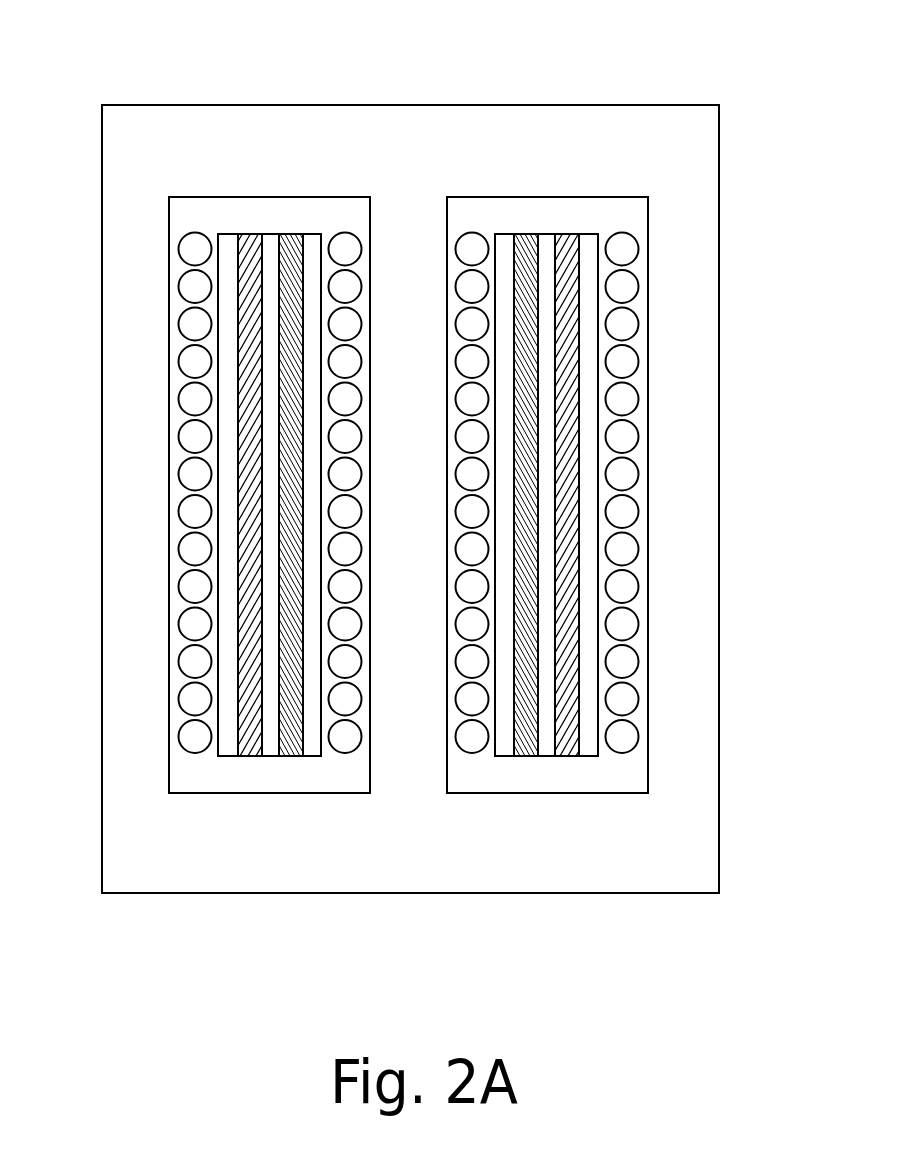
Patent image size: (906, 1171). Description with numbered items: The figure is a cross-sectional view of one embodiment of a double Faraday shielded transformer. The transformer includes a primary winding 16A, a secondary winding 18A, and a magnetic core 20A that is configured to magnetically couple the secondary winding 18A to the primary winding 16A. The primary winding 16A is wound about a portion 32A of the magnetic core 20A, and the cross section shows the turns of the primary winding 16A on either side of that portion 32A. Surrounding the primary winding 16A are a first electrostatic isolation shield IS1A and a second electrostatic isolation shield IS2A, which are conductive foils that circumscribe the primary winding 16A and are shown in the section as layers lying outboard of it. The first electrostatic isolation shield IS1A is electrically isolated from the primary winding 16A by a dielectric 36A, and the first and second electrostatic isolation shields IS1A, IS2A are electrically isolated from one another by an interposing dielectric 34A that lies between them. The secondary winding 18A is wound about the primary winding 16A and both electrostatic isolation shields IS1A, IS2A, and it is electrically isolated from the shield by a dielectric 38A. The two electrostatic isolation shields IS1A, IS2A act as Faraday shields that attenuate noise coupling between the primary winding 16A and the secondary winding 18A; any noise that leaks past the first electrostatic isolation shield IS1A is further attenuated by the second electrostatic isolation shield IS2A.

The magnetic core 20A is at (388, 105).
The secondary winding 18A is at (173, 223).
The second electrostatic isolation shield IS2A is at (568, 234).
The first electrostatic isolation shield IS1A is at (528, 756).
The portion of magnetic core 32A is at (434, 483).
The interposing dielectric 34A is at (270, 756).
The dielectric 36A is at (505, 660).
The dielectric 38A is at (227, 756).
The primary winding 16A is at (443, 748).